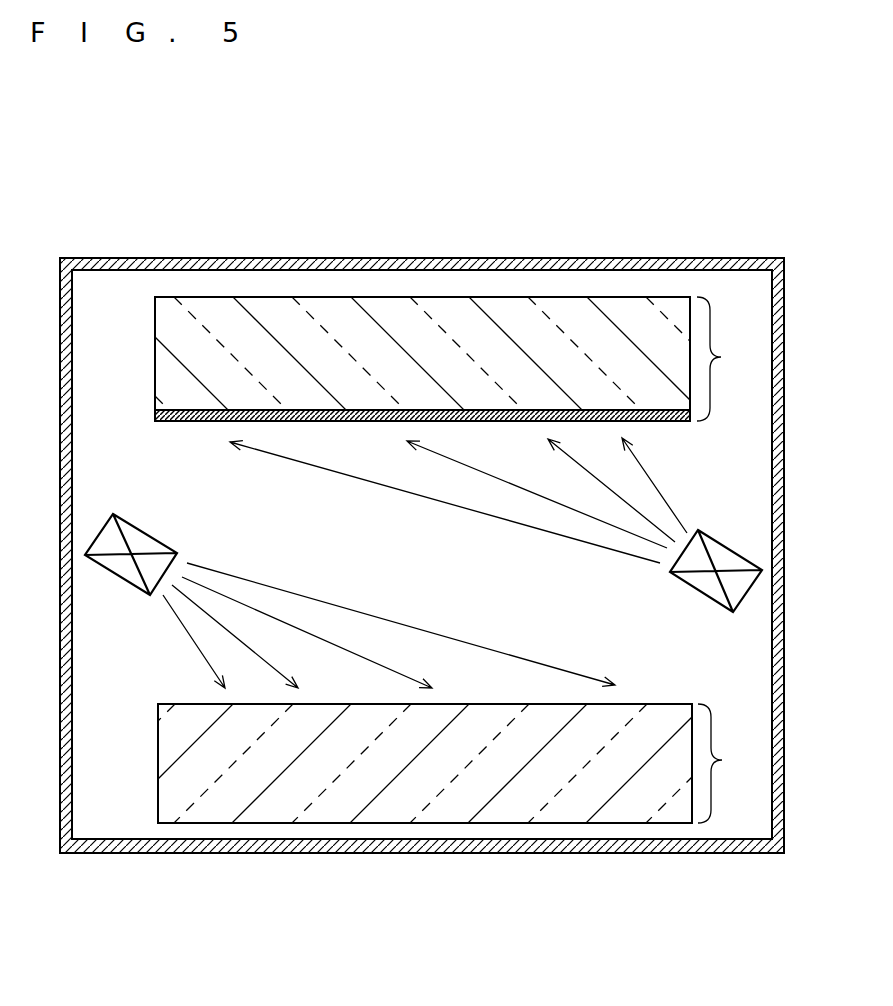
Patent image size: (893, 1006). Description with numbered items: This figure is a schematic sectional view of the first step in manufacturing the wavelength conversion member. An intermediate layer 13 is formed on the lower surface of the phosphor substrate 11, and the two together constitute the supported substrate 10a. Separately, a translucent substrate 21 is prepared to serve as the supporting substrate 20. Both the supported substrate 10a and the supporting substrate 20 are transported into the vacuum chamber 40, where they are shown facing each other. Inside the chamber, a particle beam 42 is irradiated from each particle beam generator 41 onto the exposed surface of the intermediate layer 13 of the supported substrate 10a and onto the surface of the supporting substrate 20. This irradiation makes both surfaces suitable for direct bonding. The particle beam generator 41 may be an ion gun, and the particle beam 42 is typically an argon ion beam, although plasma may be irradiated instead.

The vacuum chamber 40 is at (423, 257).
The phosphor substrate 11 is at (165, 357).
The intermediate layer 13 is at (165, 415).
The supported substrate 10a is at (733, 359).
The translucent substrate 21 is at (170, 762).
The supporting substrate 20 is at (729, 763).
The particle beam generator 41 is at (148, 533).
The particle beam 42 is at (284, 589).